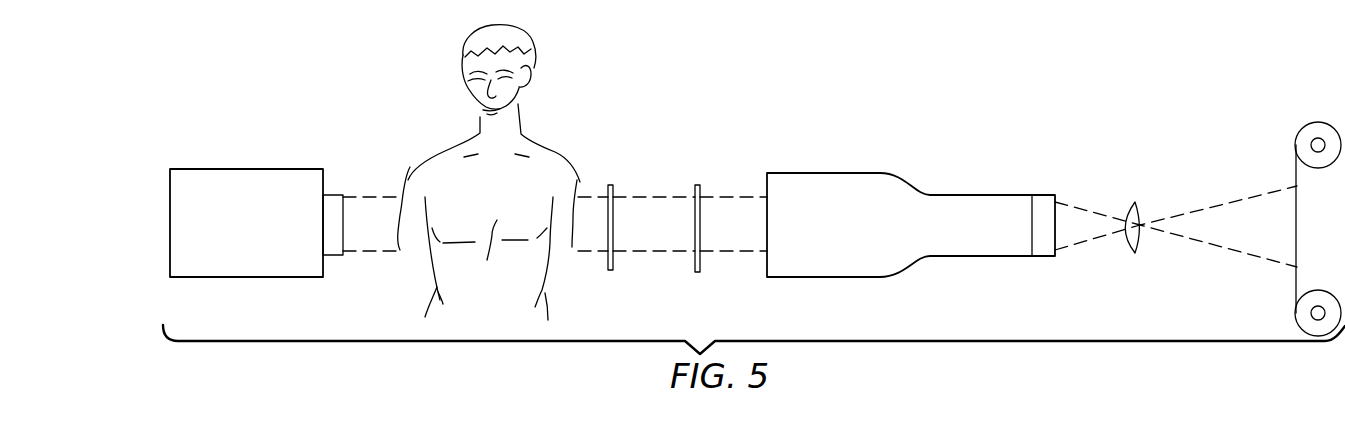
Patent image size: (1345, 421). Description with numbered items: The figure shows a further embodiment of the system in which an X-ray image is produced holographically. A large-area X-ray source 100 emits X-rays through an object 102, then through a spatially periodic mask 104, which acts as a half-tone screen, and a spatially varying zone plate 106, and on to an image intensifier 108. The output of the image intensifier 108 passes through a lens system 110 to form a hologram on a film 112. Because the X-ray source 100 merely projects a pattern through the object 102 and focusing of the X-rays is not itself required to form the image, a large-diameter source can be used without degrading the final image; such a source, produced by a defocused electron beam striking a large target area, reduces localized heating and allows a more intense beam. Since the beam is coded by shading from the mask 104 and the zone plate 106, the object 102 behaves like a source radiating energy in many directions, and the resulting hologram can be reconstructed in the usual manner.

The large-area X-ray source 100 is at (237, 170).
The object 102 is at (489, 172).
The spatially periodic mask 104 is at (612, 185).
The spatially varying zone plate 106 is at (699, 185).
The image intensifier 108 is at (855, 150).
The lens system 110 is at (1138, 206).
The film 112 is at (1297, 211).